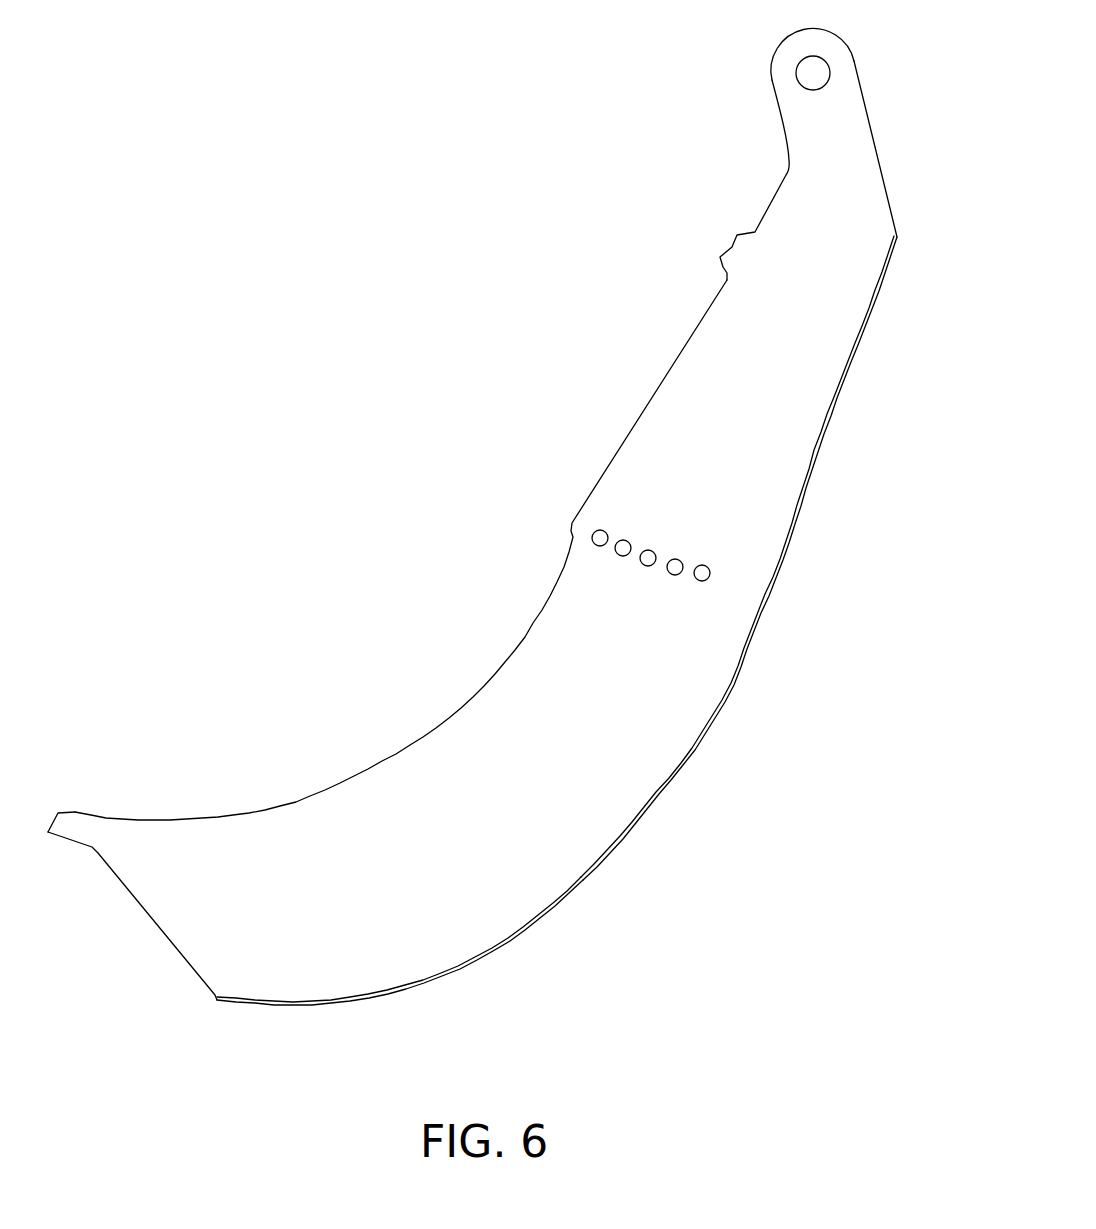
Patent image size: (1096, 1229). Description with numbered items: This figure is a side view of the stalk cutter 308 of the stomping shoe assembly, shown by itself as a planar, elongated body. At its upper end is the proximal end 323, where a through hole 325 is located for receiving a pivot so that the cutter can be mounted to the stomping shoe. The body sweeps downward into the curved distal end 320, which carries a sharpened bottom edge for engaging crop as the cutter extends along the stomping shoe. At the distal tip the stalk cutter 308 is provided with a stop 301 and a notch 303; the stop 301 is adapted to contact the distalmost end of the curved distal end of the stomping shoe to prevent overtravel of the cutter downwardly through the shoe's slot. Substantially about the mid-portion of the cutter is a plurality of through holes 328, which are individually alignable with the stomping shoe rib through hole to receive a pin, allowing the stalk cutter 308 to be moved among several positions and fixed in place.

The stop 301 is at (53, 815).
The notch 303 is at (137, 897).
The stalk cutter 308 is at (750, 668).
The curved distal end 320 is at (297, 977).
The proximal end 323 is at (853, 193).
The through hole 325 is at (815, 73).
The through holes 328 is at (702, 573).